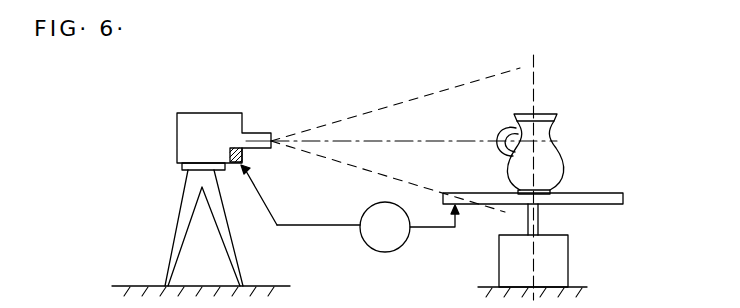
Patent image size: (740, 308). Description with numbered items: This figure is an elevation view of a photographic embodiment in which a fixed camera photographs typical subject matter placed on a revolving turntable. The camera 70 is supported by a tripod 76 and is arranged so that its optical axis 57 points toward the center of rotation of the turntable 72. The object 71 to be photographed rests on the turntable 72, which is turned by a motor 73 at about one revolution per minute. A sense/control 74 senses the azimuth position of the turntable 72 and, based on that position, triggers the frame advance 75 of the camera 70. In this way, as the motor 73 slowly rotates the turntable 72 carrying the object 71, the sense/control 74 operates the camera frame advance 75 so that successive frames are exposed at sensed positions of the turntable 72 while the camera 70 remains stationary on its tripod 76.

The optical axis 57 is at (397, 142).
The camera 70 is at (197, 112).
The object 71 is at (547, 114).
The turntable 72 is at (617, 193).
The motor 73 is at (568, 262).
The sense/control 74 is at (377, 252).
The frame advance 75 is at (247, 158).
The tripod 76 is at (184, 212).